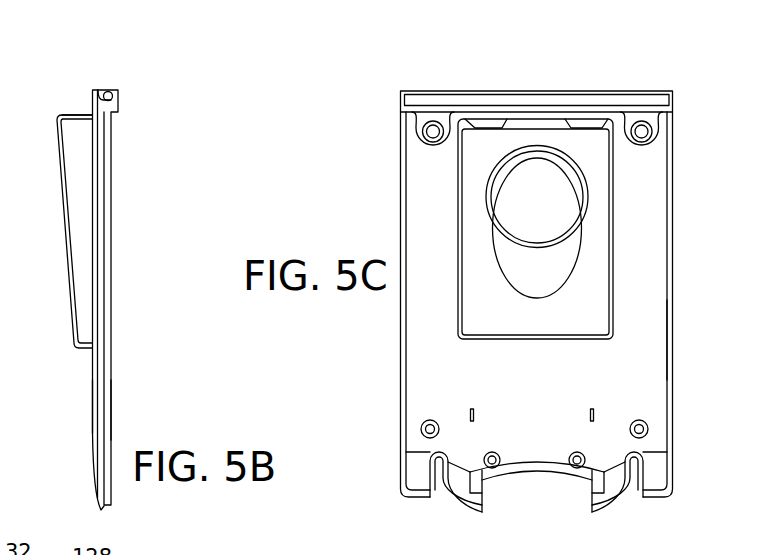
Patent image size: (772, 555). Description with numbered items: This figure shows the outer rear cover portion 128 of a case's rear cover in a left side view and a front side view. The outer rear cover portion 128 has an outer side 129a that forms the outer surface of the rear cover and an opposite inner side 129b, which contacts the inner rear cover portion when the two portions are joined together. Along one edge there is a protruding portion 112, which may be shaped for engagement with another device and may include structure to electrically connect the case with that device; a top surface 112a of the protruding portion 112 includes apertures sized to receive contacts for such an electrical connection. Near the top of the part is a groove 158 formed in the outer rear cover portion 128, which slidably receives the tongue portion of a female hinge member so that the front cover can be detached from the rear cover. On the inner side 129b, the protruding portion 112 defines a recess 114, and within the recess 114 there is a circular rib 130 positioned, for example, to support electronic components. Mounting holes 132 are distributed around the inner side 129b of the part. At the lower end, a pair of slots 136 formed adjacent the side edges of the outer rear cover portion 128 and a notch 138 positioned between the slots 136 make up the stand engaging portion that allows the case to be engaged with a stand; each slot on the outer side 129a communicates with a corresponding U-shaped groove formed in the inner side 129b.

In FIG. 5B, the outer rear cover portion 128 is at (131, 154).
In FIG. 5C, the outer rear cover portion 128 is at (691, 122).
In FIG. 5B, the protruding portion 112 is at (60, 232).
In FIG. 5B, the top surface of the protruding portion 112a is at (67, 117).
In FIG. 5B, the groove 158 is at (110, 96).
In FIG. 5B, the outer side 129a is at (93, 410).
In FIG. 5B, the inner side 129b is at (113, 410).
In FIG. 5C, the inner side 129b is at (652, 339).
In FIG. 5C, the recess 114 is at (602, 286).
In FIG. 5C, the circular rib 130 is at (587, 213).
In FIG. 5C, the mounting holes 132 is at (432, 138).
In FIG. 5C, the slots 136 is at (450, 461).
In FIG. 5C, the notch 138 is at (502, 480).